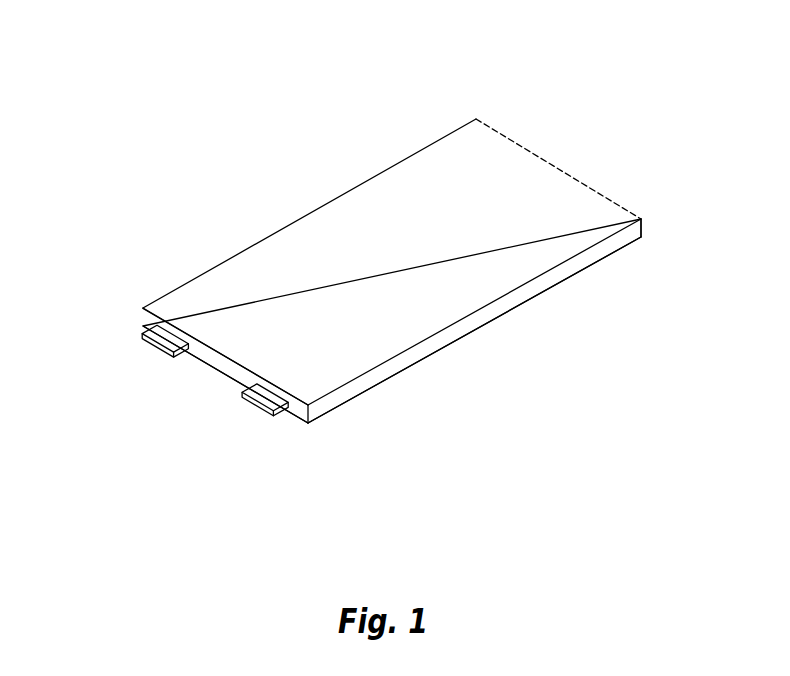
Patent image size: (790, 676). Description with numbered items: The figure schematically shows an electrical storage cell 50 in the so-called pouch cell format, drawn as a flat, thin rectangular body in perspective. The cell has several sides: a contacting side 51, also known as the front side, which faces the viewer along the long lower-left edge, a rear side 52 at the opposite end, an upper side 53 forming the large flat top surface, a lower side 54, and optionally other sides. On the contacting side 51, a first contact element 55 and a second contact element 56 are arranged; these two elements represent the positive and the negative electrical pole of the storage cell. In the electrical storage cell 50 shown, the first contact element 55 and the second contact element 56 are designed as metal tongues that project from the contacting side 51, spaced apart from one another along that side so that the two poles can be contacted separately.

The electrical storage cell 50 is at (531, 124).
The contacting side 51 is at (213, 357).
The rear side 52 is at (653, 219).
The upper side 53 is at (347, 252).
The lower side 54 is at (472, 347).
The first contact element 55 is at (162, 345).
The second contact element 56 is at (262, 405).